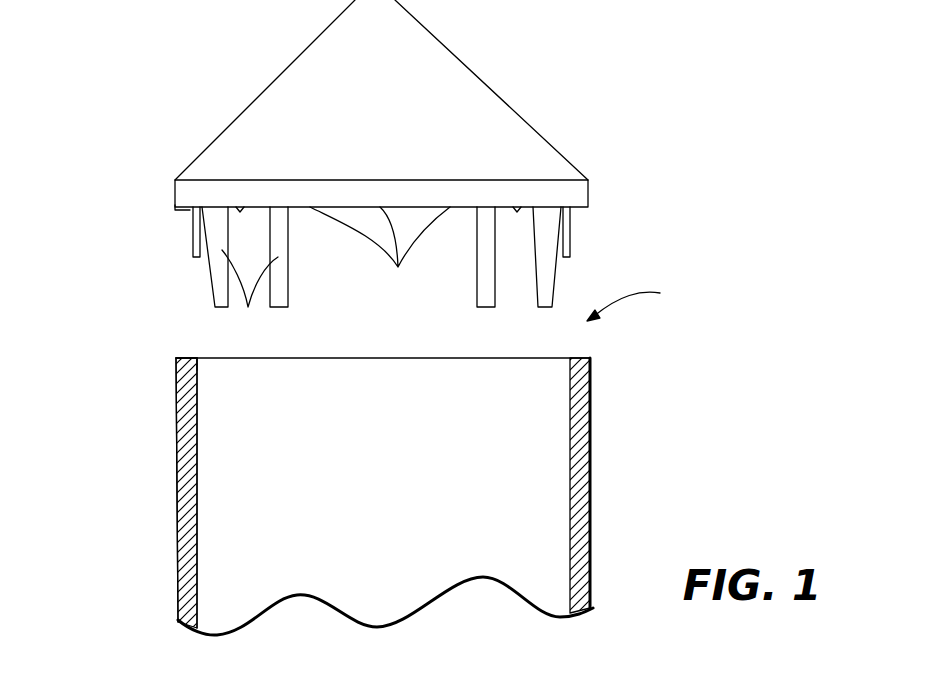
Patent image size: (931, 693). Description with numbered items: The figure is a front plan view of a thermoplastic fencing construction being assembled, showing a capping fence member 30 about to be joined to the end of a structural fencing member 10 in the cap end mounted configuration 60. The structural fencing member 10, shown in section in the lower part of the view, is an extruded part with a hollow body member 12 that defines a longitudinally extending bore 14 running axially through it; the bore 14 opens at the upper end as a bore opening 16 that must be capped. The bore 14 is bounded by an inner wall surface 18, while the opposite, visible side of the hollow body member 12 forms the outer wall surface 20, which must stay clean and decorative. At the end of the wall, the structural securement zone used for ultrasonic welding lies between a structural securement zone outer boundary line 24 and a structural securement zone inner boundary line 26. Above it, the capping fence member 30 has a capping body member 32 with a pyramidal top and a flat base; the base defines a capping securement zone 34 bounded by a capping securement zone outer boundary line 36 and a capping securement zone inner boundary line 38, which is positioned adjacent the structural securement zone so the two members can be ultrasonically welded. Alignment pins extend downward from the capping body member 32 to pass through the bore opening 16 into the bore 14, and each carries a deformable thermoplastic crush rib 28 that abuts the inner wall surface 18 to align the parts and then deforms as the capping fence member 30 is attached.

The structural fencing member 10 is at (378, 473).
The hollow body member 12 is at (185, 428).
The longitudinally extending bore 14 is at (369, 545).
The bore opening 16 is at (405, 358).
The inner wall surface 18 is at (197, 470).
The outer wall surface 20 is at (178, 515).
The structural securement zone outer boundary line 24 is at (175, 360).
The structural securement zone inner boundary line 26 is at (197, 360).
The crush rib 28 is at (195, 237).
The capping fence member 30 is at (362, 125).
The capping body member 32 is at (478, 72).
The capping securement zone 34 is at (180, 216).
The capping securement zone outer boundary line 36 is at (170, 206).
The capping securement zone inner boundary line 38 is at (190, 213).
The cap end mounted configuration 60 is at (641, 299).